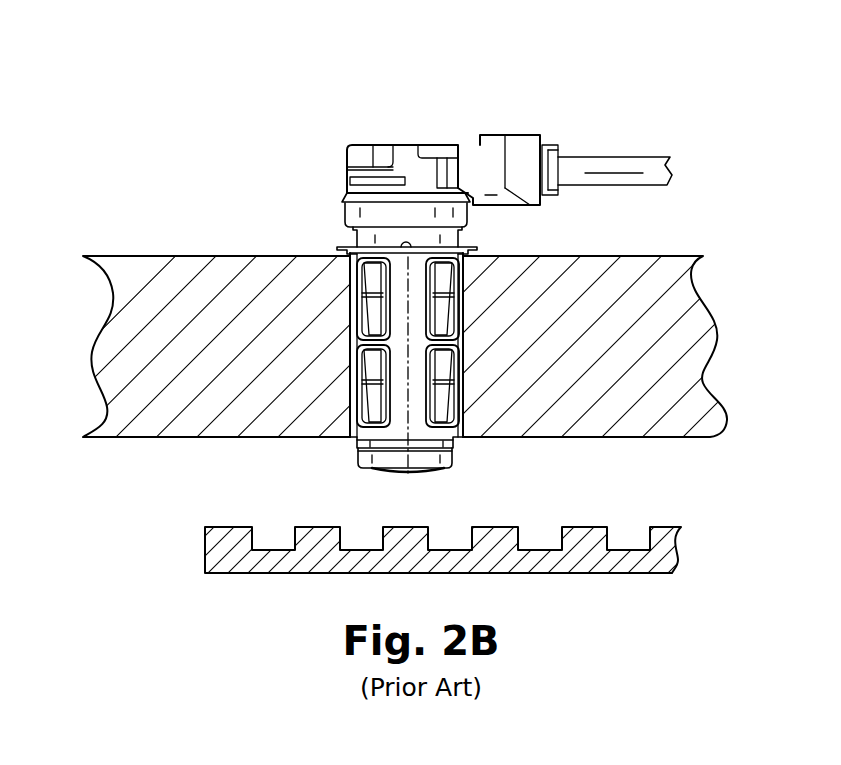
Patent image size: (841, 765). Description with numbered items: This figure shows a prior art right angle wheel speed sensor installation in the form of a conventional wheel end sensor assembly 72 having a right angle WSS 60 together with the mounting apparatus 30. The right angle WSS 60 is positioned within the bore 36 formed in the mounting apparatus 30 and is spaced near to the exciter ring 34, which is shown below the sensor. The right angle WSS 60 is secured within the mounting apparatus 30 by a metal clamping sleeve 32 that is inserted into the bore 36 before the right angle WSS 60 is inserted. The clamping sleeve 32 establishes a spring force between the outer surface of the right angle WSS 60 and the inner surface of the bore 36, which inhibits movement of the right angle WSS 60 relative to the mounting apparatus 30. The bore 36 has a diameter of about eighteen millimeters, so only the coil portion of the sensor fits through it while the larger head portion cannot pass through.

The mounting apparatus 30 is at (640, 256).
The metal clamping sleeve 32 is at (462, 442).
The exciter ring 34 is at (672, 555).
The bore 36 is at (337, 457).
The right angle WSS 60 is at (527, 116).
The wheel end sensor assembly 72 is at (752, 226).